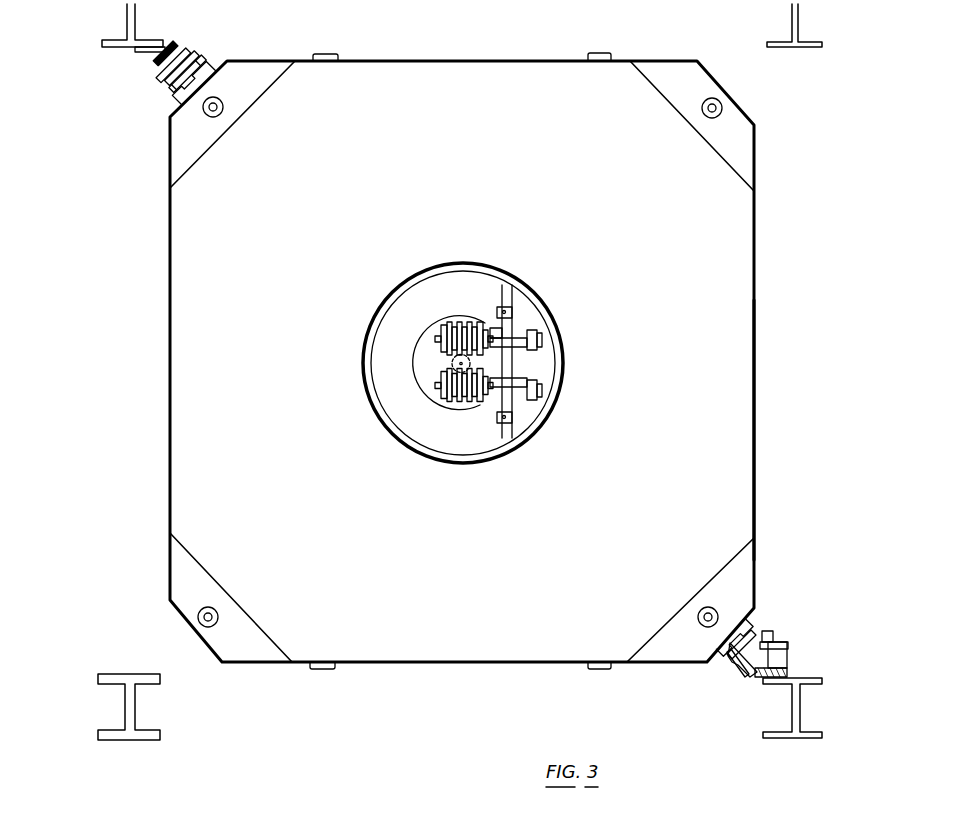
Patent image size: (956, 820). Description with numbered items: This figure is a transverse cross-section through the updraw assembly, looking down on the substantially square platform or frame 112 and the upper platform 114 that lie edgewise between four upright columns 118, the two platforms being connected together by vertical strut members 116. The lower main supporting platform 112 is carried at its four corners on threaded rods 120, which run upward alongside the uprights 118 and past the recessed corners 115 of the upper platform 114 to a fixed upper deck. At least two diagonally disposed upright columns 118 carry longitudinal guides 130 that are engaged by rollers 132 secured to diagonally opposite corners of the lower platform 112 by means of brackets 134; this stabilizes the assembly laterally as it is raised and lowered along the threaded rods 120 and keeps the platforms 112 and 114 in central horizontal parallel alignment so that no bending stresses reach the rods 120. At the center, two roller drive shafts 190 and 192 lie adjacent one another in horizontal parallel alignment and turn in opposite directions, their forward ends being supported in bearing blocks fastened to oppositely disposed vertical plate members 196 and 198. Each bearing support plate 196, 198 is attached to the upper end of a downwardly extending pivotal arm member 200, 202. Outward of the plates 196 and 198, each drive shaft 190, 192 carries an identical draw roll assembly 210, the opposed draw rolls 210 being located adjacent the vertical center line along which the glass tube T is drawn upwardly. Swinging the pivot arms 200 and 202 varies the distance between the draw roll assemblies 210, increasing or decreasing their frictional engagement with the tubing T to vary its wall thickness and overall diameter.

The lower main supporting platform 112 is at (170, 150).
The upper platform 114 is at (740, 431).
The recessed corners 115 is at (262, 633).
The vertical strut members 116 is at (596, 53).
The upright columns 118 is at (110, 47).
The threaded rods 120 is at (222, 110).
The longitudinal guides 130 is at (790, 672).
The rollers 132 is at (167, 72).
The brackets 134 is at (737, 666).
The roller drive shaft 190 is at (540, 396).
The roller drive shaft 192 is at (542, 330).
The vertical plate member 196 is at (530, 382).
The vertical plate member 198 is at (525, 346).
The pivotal arm member 200 is at (512, 440).
The pivotal arm member 202 is at (504, 290).
The draw roll assembly 210 is at (462, 318).
The glass tube T is at (452, 362).